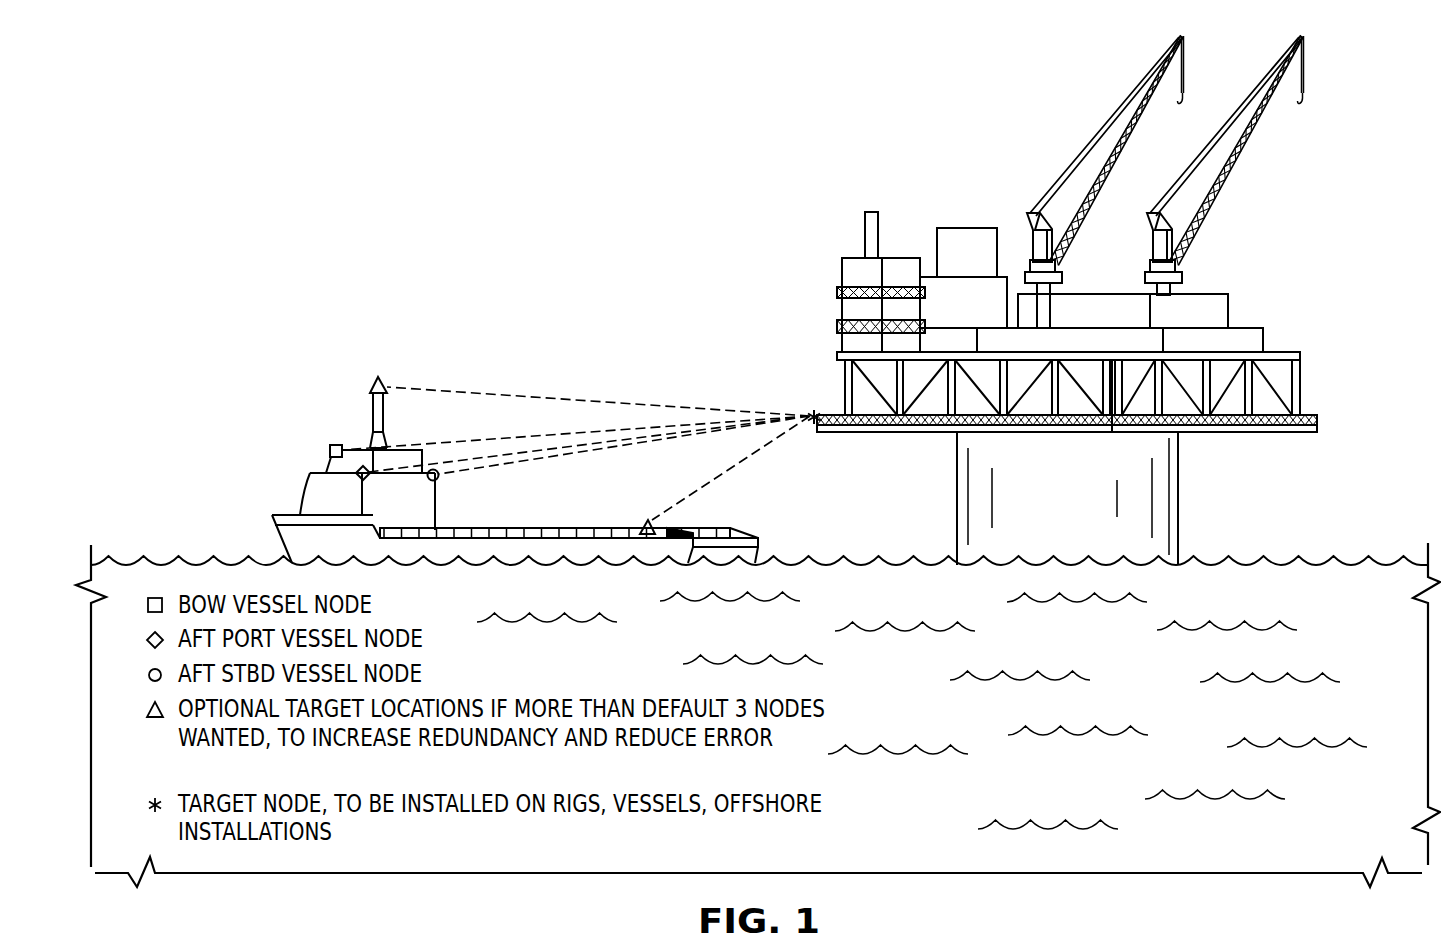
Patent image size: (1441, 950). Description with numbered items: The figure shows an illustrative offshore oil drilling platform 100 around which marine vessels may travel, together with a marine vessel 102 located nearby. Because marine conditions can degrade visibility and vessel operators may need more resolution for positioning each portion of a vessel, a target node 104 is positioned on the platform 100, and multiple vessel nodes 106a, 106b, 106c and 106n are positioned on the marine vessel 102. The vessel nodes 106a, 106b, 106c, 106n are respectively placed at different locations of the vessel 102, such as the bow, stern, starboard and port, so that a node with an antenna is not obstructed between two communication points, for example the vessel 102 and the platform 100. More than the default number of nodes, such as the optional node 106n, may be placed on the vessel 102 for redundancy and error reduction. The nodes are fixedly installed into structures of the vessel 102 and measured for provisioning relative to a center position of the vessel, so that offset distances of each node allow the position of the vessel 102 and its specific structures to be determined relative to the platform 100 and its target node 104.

The offshore oil drilling platform 100 is at (925, 180).
The marine vessel 102 is at (331, 400).
The target node 104 is at (811, 411).
The vessel node 106a is at (330, 450).
The vessel node 106b is at (357, 478).
The vessel node 106c is at (437, 480).
The vessel node 106n is at (642, 522).